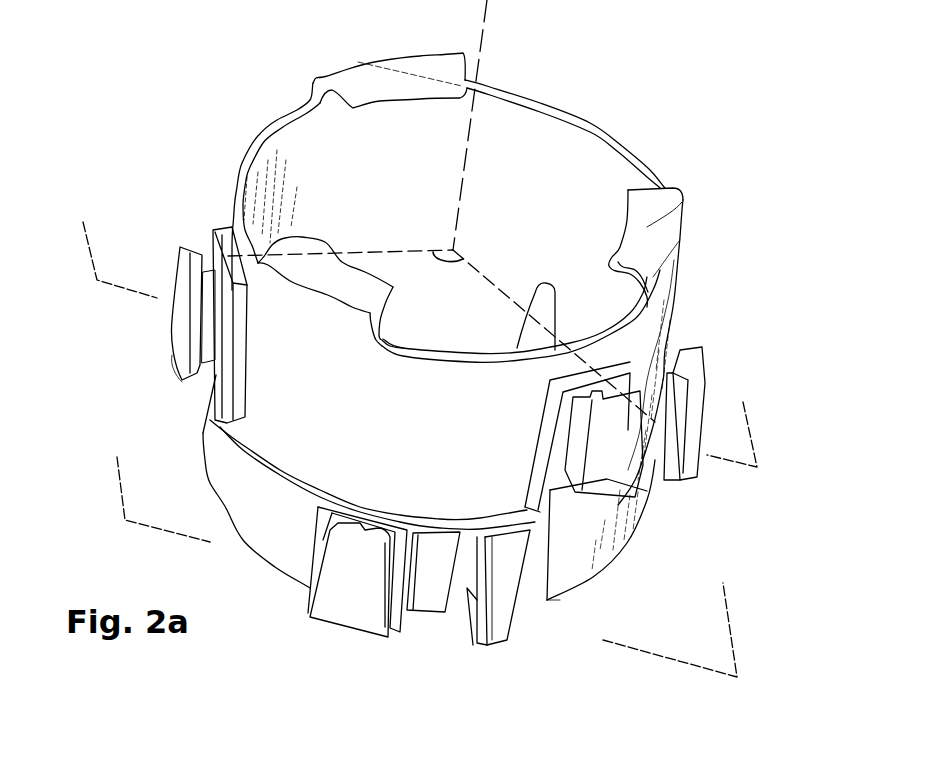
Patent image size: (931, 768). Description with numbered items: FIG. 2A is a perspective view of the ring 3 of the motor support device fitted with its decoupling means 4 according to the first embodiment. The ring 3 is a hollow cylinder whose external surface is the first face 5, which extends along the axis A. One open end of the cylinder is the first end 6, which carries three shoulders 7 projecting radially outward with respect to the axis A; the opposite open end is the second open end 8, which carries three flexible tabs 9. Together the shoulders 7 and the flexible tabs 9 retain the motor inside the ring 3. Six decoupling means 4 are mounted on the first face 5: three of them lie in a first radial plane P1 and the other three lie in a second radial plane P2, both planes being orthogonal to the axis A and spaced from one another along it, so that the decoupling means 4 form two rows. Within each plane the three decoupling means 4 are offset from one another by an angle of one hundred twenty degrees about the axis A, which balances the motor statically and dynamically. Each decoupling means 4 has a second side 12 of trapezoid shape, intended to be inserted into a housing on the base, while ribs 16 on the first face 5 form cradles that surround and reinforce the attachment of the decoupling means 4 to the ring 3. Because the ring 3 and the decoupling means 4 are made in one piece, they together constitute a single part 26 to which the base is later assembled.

The ring 3 is at (602, 123).
The decoupling means 4 is at (173, 358).
The first face 5 is at (443, 400).
The first end 6 is at (543, 98).
The shoulders 7 is at (393, 97).
The second open end 8 is at (567, 590).
The flexible tabs 9 is at (490, 647).
The second side 12 is at (177, 318).
The ribs 16 is at (245, 337).
The single part 26 is at (188, 129).
The axis A is at (483, 20).
The first radial plane P1 is at (120, 260).
The second radial plane P2 is at (163, 499).